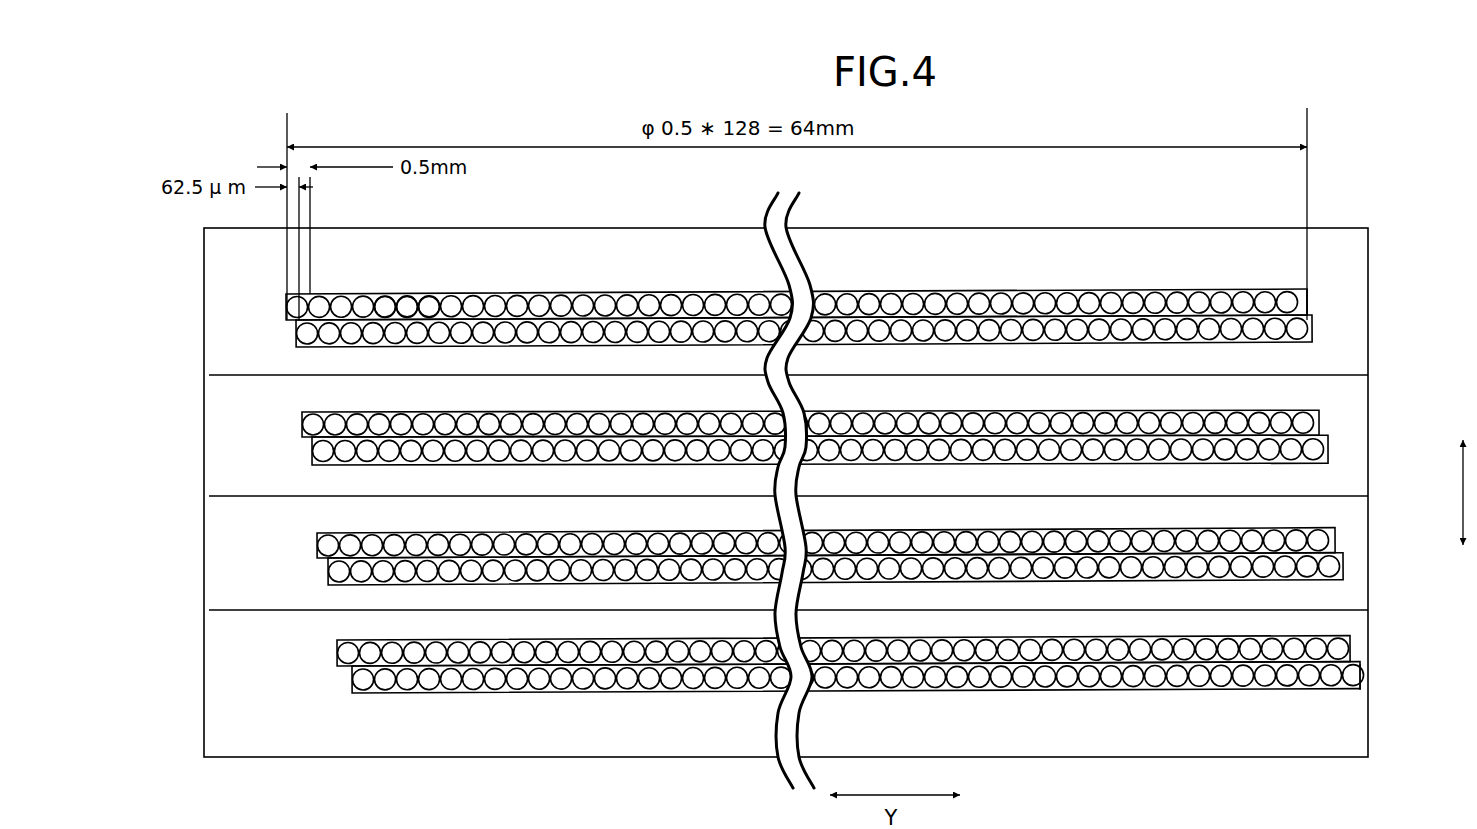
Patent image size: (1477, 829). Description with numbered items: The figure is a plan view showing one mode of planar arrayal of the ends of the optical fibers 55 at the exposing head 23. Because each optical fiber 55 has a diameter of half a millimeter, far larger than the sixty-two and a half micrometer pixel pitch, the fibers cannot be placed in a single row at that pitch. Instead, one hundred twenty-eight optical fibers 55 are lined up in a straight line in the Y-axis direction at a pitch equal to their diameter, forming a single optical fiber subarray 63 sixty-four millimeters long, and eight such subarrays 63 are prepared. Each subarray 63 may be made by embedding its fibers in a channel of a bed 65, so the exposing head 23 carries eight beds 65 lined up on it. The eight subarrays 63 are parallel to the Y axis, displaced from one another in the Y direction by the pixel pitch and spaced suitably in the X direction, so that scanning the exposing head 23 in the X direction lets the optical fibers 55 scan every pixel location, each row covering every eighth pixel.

The exposing head 23 is at (1389, 274).
The optical fibers 55 is at (383, 296).
The optical fiber subarray 63 is at (282, 307).
The bed 65 is at (1357, 700).